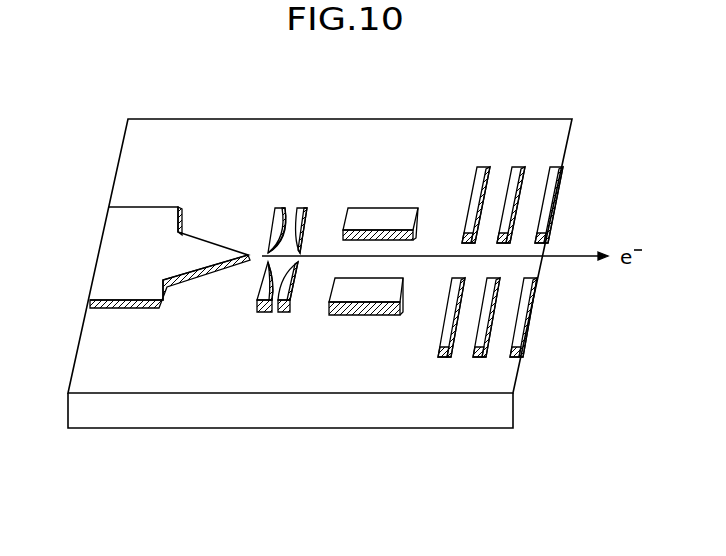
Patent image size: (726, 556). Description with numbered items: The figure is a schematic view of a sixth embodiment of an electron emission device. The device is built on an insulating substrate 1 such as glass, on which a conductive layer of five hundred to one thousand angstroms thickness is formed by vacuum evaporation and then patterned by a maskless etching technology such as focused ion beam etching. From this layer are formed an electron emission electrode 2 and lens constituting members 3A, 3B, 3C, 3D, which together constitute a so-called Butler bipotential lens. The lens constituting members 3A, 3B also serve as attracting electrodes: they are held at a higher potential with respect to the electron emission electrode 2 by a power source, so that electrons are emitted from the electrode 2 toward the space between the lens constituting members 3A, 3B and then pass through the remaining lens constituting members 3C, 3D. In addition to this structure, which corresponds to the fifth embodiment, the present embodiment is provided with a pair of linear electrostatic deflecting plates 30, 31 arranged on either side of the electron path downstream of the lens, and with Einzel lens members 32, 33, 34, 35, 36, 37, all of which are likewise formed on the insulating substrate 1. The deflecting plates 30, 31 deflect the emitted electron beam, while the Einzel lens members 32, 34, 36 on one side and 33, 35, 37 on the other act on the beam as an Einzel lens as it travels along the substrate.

The insulating substrate 1 is at (427, 415).
The electron emission electrode 2 is at (112, 240).
The lens constituting member 3A is at (262, 297).
The lens constituting member 3B is at (283, 205).
The lens constituting member 3C is at (287, 303).
The lens constituting member 3D is at (302, 205).
The linear electrostatic deflecting plate 30 is at (377, 215).
The linear electrostatic deflecting plate 31 is at (360, 293).
The Einzel lens member 32 is at (478, 168).
The Einzel lens member 33 is at (445, 333).
The Einzel lens member 34 is at (517, 168).
The Einzel lens member 35 is at (477, 338).
The Einzel lens member 36 is at (553, 178).
The Einzel lens member 37 is at (518, 337).